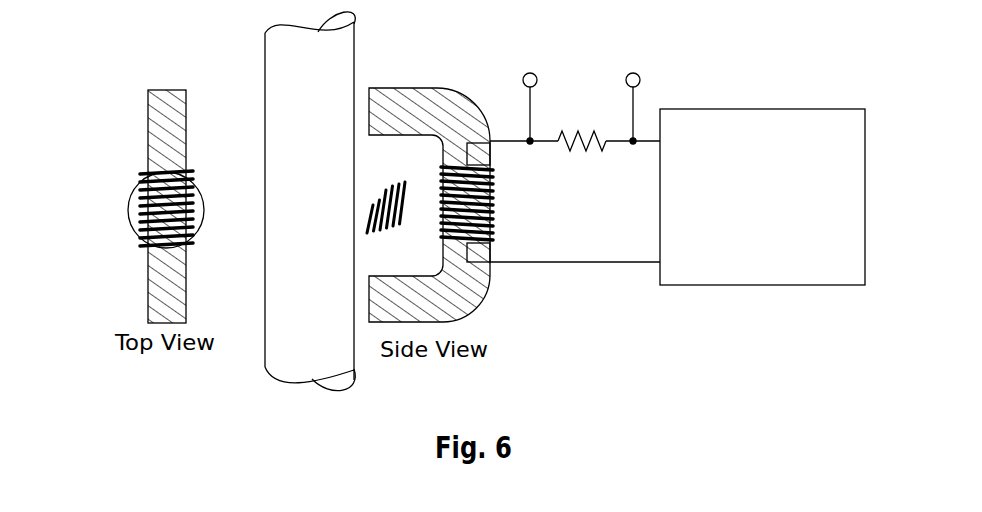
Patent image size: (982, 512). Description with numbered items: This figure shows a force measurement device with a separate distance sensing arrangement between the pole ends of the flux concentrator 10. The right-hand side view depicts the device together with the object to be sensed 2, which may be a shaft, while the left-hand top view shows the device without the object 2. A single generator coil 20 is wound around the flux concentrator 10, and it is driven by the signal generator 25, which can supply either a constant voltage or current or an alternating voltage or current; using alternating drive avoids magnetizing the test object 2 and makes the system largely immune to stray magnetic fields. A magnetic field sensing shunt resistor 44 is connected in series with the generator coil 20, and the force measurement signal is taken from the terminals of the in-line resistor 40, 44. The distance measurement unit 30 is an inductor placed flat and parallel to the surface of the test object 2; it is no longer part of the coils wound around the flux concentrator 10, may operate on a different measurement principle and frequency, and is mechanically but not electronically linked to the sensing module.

The object to be sensed 2 is at (335, 49).
The flux concentrator 10 is at (168, 100).
The generator coil 20 is at (494, 195).
The signal generator 25 is at (770, 114).
The distance measurement unit 30 is at (140, 174).
The resistor terminal 40 is at (575, 92).
The shunt resistor 44 is at (578, 130).